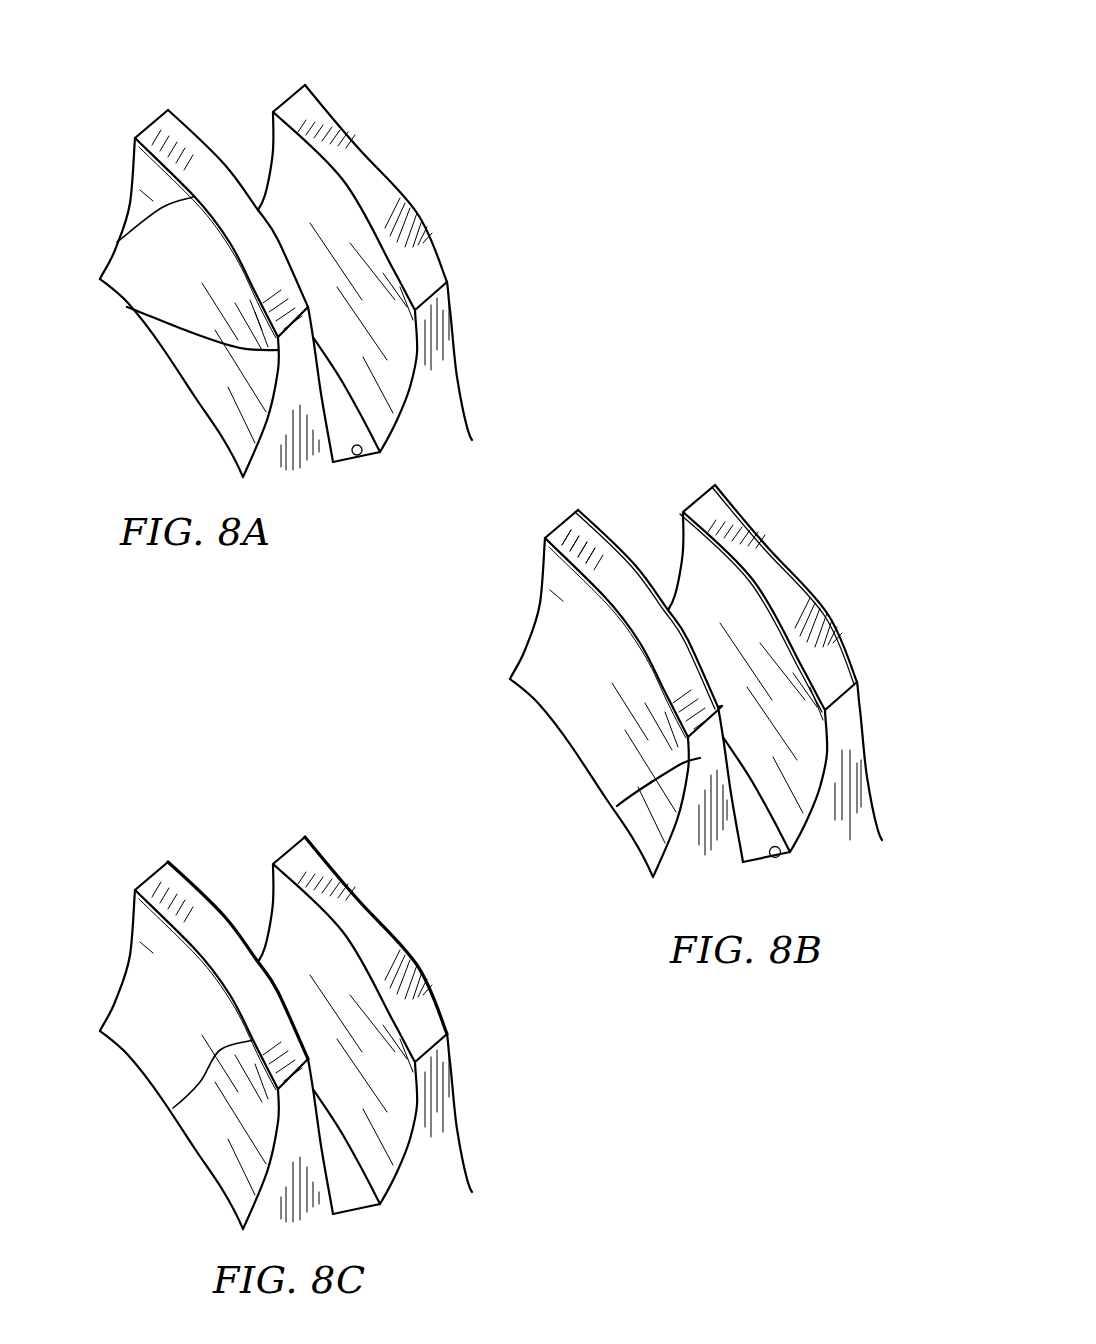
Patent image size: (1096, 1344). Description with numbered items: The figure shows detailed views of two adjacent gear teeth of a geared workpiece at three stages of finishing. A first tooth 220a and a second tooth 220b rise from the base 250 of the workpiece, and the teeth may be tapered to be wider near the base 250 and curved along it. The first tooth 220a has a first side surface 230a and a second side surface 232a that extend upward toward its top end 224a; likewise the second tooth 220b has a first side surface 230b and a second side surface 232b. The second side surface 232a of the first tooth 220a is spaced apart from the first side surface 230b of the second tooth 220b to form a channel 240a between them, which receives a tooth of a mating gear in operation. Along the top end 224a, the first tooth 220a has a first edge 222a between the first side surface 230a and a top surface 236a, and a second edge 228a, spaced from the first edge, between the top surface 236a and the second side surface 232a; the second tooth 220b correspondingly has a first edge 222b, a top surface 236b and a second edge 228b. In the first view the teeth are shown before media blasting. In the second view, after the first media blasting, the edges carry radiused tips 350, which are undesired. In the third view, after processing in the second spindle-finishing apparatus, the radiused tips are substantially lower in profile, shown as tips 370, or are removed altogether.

In FIG. 8A, the first tooth 220a is at (292, 417).
In FIG. 8B, the first tooth 220a is at (705, 822).
In FIG. 8C, the first tooth 220a is at (295, 1167).
In FIG. 8A, the second tooth 220b is at (443, 393).
In FIG. 8B, the second tooth 220b is at (847, 770).
In FIG. 8C, the second tooth 220b is at (443, 1152).
In FIG. 8A, the first edge 222a is at (117, 242).
In FIG. 8B, the first edge 222a is at (560, 558).
In FIG. 8C, the first edge 222a is at (173, 1108).
In FIG. 8A, the first edge of second tooth 222b is at (343, 180).
In FIG. 8A, the top end 224a is at (127, 307).
In FIG. 8B, the top end 224a is at (617, 806).
In FIG. 8A, the second edge 228a is at (185, 125).
In FIG. 8B, the second edge 228a is at (617, 544).
In FIG. 8C, the second edge 228a is at (202, 903).
In FIG. 8A, the second edge of second tooth 228b is at (357, 133).
In FIG. 8A, the first side surface 230a is at (137, 203).
In FIG. 8B, the first side surface 230a is at (545, 660).
In FIG. 8C, the first side surface 230a is at (147, 992).
In FIG. 8A, the first side surface of second tooth 230b is at (375, 293).
In FIG. 8C, the first side surface of second tooth 230b is at (393, 1071).
In FIG. 8A, the second side surface 232a is at (320, 385).
In FIG. 8B, the second side surface 232a is at (732, 785).
In FIG. 8C, the second side surface 232a is at (322, 1132).
In FIG. 8A, the second side surface of second tooth 232b is at (415, 210).
In FIG. 8A, the top surface 236a is at (163, 135).
In FIG. 8B, the top surface 236a is at (562, 525).
In FIG. 8C, the top surface 236a is at (247, 988).
In FIG. 8A, the top surface of second tooth 236b is at (310, 103).
In FIG. 8A, the channel 240a is at (231, 150).
In FIG. 8B, the channel 240a is at (797, 772).
In FIG. 8C, the channel 240a is at (352, 1195).
In FIG. 8A, the base 250 is at (355, 456).
In FIG. 8B, the base 250 is at (775, 858).
In FIG. 8B, the radiused tips 350 is at (702, 470).
In FIG. 8C, the lower-profile radiused tips 370 is at (294, 826).